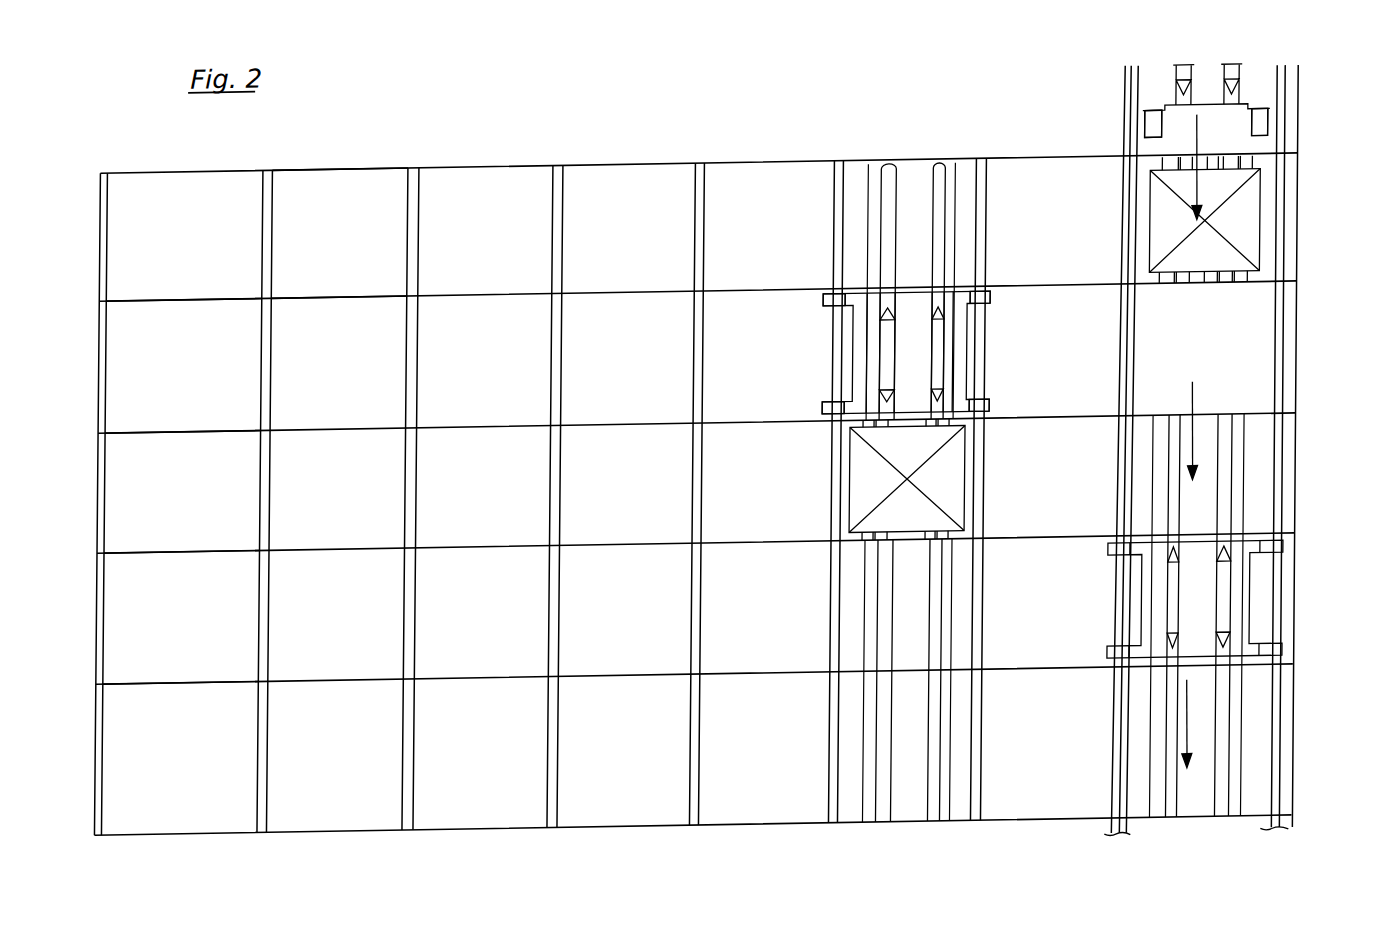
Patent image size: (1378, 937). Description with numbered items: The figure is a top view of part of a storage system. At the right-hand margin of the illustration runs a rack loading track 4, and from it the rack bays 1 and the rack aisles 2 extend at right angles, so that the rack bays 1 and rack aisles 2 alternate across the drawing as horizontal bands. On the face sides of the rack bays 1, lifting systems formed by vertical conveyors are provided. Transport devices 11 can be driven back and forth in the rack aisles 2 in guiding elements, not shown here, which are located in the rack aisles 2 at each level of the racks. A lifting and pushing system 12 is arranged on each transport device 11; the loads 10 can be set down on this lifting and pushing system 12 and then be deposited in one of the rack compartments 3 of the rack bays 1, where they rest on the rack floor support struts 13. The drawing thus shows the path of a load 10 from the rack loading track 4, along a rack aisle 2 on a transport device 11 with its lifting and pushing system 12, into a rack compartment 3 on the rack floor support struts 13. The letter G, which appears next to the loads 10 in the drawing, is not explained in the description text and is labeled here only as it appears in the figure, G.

The storage rack 1 is at (636, 168).
The storage level 2 is at (425, 404).
The storage compartment 3 is at (353, 206).
The lifting device 4 is at (1308, 358).
The load carrier pallet 10 is at (1247, 263).
The support stop 11 is at (1271, 150).
The transfer carriage 12 is at (1256, 104).
The conveyor track 13 is at (890, 192).
The goods G is at (1264, 287).